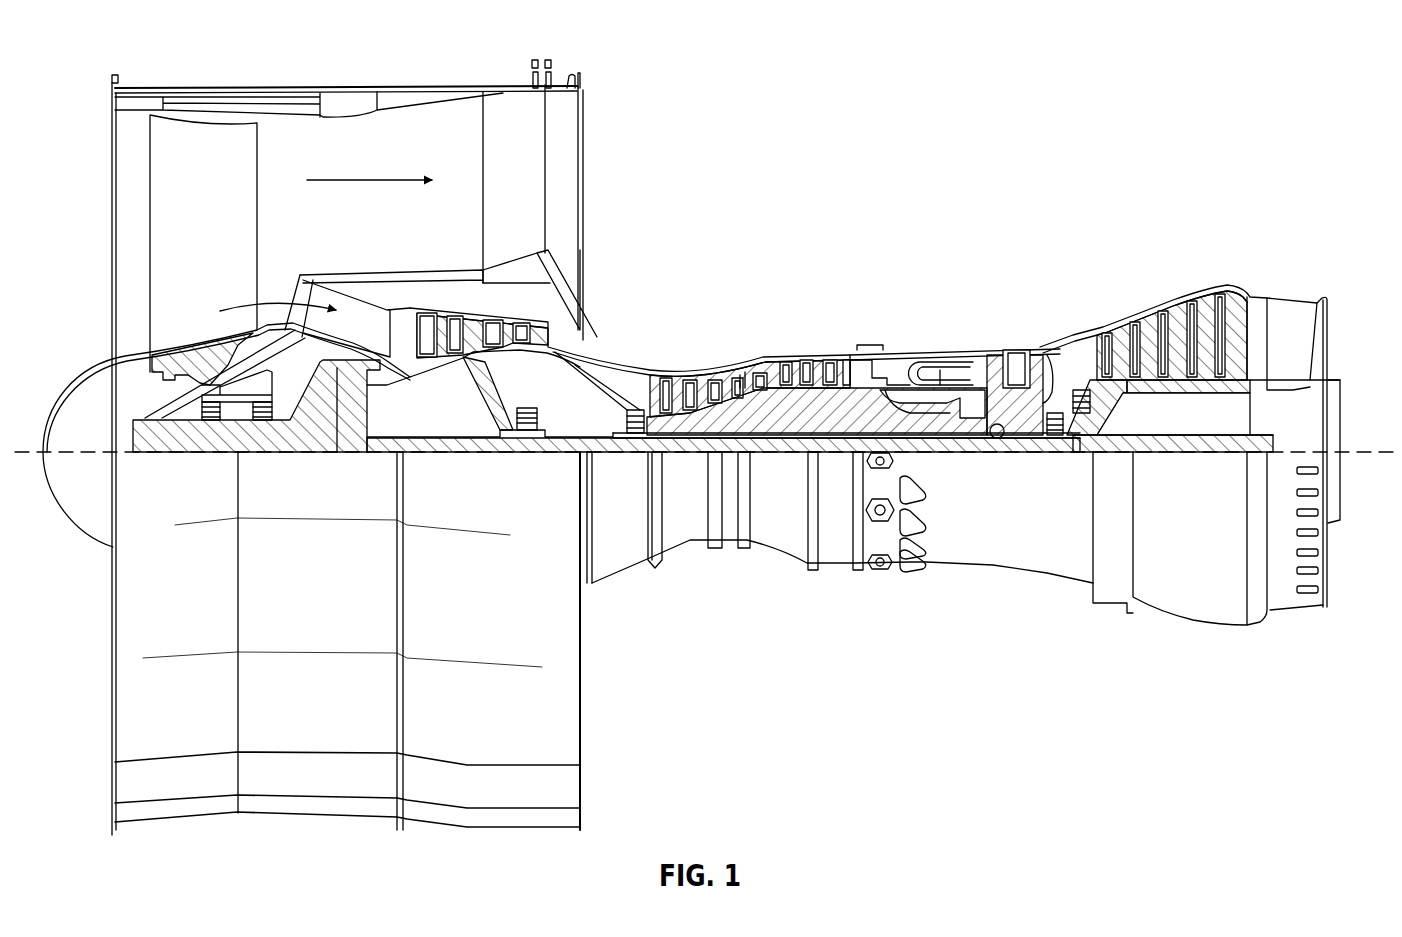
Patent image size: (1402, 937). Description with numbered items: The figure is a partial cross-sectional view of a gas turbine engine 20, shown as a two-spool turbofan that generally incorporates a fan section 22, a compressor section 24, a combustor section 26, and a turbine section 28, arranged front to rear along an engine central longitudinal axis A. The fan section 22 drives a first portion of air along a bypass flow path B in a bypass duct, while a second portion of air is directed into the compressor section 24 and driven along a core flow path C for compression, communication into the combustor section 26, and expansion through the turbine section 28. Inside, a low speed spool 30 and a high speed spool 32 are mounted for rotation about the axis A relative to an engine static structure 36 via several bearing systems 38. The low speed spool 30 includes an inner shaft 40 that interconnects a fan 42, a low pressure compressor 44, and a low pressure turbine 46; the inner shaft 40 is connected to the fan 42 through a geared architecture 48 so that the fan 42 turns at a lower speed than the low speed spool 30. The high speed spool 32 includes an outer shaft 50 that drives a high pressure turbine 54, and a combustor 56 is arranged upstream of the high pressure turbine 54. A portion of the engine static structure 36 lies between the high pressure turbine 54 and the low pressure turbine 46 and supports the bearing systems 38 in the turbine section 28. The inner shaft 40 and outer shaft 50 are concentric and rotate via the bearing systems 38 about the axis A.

The gas turbine engine 20 is at (1192, 130).
The fan section 22 is at (300, 67).
The compressor section 24 is at (634, 330).
The combustor section 26 is at (908, 283).
The turbine section 28 is at (1101, 283).
The low speed spool 30 is at (784, 461).
The high speed spool 32 is at (832, 411).
The engine static structure 36 is at (834, 575).
The bearing systems 38 is at (217, 422).
The inner shaft 40 is at (608, 447).
The fan 42 is at (190, 224).
The low pressure compressor 44 is at (493, 325).
The low pressure turbine 46 is at (1177, 310).
The geared architecture 48 is at (357, 428).
The outer shaft 50 is at (1005, 441).
The high pressure turbine 54 is at (1013, 347).
The combustor 56 is at (745, 412).
The engine central longitudinal axis A is at (1362, 447).
The bypass flow path B is at (380, 176).
The core flow path C is at (233, 300).